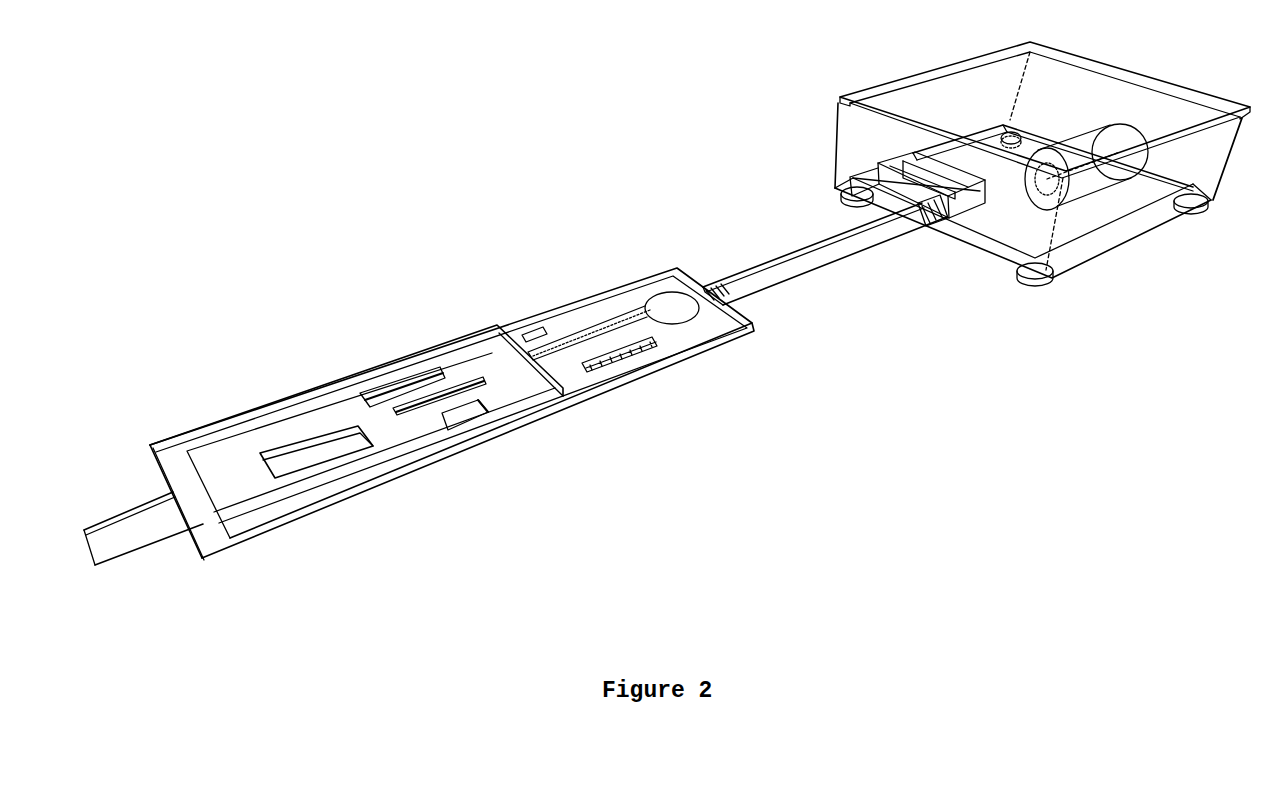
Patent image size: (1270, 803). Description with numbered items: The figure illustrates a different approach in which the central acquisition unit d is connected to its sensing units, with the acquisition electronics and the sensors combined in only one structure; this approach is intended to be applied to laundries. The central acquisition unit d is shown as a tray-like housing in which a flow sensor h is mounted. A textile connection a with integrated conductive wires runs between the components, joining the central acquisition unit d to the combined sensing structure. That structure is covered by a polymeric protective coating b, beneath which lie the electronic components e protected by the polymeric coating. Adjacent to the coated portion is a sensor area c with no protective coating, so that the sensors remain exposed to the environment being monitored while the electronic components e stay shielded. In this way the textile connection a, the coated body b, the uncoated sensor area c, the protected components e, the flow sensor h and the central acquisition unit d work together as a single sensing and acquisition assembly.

The textile connection a is at (815, 282).
The polymeric protective coating b is at (356, 490).
The sensor area c is at (660, 343).
The central acquisition unit d is at (1138, 242).
The electronic components e is at (290, 472).
The flow sensor h is at (1072, 243).